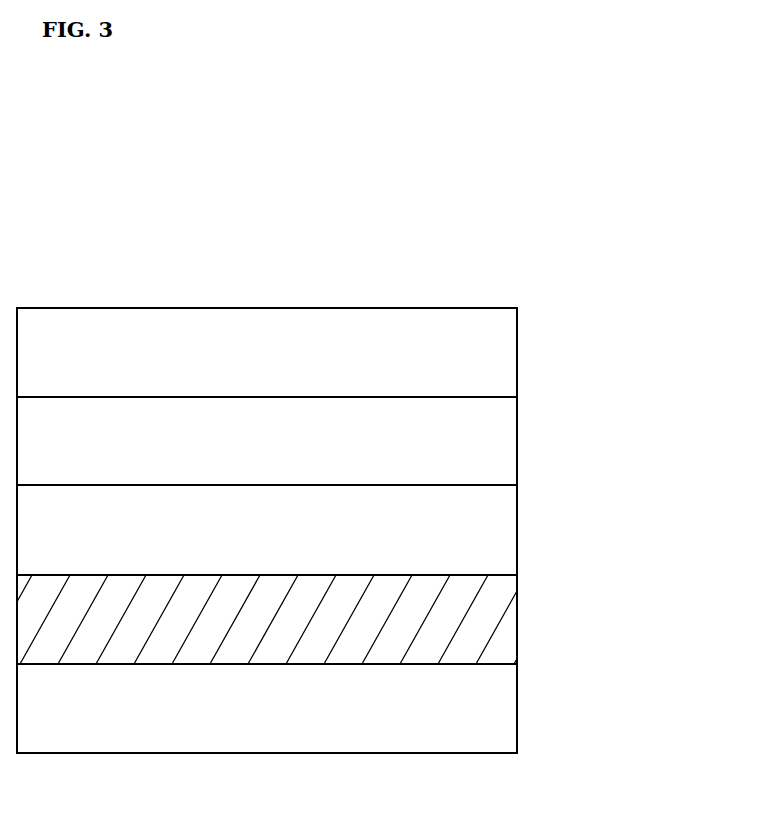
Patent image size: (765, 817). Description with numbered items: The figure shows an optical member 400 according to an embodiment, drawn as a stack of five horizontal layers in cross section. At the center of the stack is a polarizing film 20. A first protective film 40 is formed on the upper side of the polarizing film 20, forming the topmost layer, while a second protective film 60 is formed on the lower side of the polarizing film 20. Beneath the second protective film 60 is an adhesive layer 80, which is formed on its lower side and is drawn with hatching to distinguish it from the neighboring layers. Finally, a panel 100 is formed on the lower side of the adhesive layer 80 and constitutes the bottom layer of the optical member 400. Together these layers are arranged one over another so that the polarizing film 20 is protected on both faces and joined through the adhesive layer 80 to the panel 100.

The optical member 400 is at (502, 260).
The first protective film 40 is at (478, 354).
The polarizing film 20 is at (478, 443).
The second protective film 60 is at (478, 531).
The adhesive layer 80 is at (478, 622).
The panel 100 is at (478, 709).